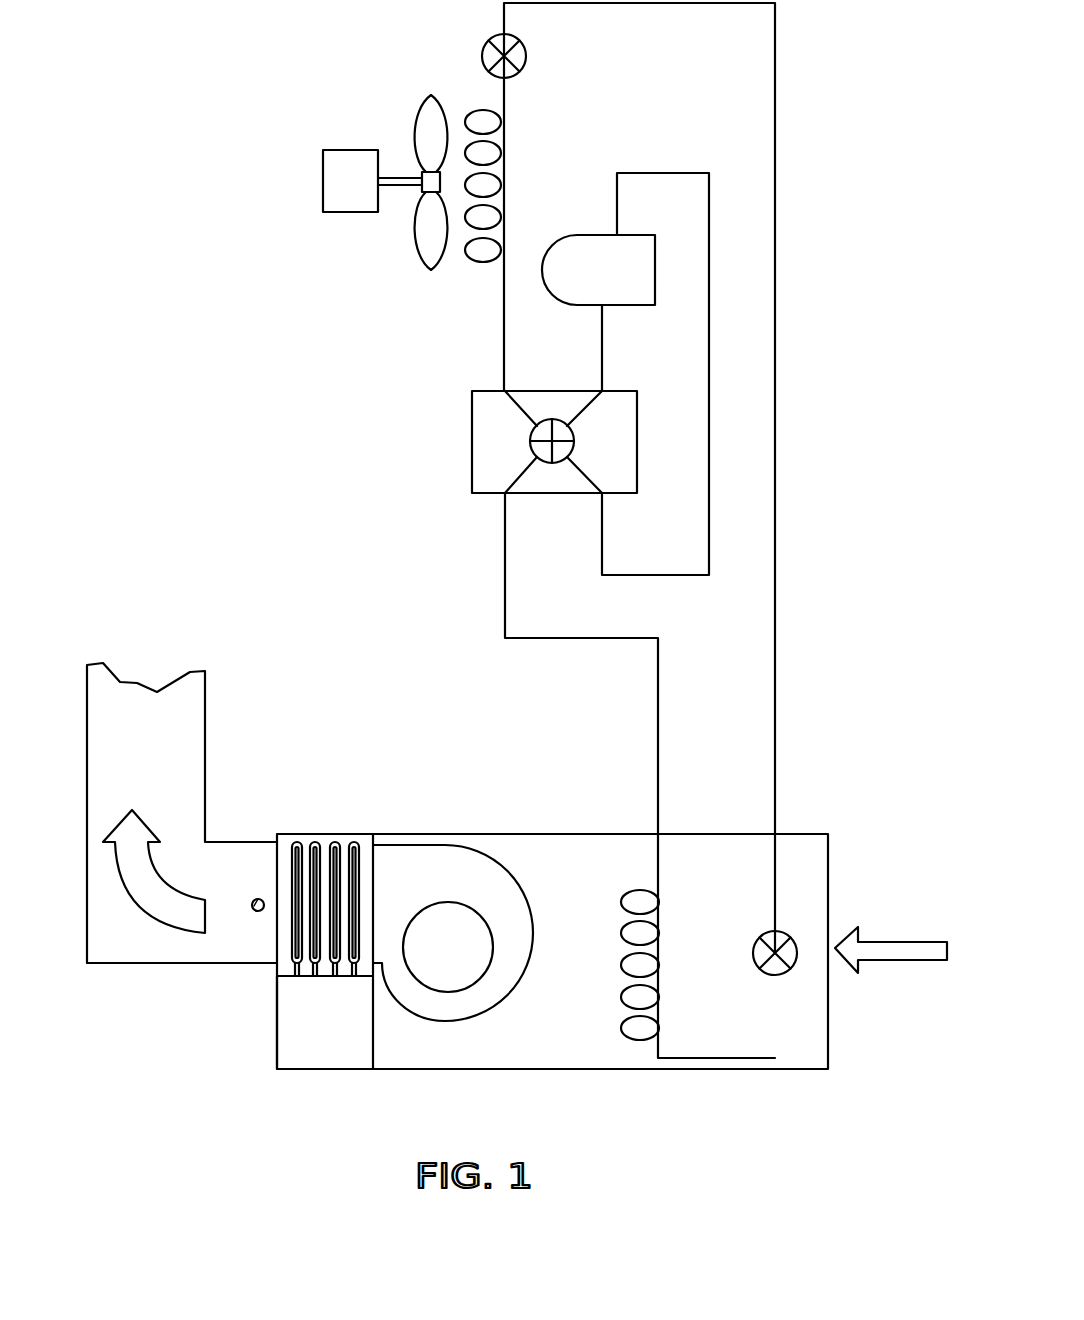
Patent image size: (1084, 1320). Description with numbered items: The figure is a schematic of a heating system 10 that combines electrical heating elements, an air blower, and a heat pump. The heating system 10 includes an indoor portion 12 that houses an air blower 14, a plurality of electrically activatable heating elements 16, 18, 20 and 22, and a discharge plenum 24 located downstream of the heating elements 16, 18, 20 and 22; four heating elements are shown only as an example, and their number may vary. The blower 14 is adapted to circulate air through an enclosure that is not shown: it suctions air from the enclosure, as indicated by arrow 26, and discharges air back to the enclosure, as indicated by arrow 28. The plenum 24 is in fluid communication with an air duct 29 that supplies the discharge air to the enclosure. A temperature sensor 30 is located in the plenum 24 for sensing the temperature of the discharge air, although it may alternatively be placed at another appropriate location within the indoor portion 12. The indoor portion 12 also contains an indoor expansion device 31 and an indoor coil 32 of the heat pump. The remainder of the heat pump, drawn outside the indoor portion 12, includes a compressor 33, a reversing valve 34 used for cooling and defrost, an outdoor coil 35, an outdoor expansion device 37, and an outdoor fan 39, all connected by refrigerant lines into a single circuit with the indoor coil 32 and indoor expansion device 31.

The heating system 10 is at (313, 453).
The indoor portion 12 is at (461, 828).
The air blower 14 is at (513, 875).
The heating element 16 is at (354, 840).
The heating element 18 is at (335, 840).
The heating element 20 is at (315, 840).
The heating element 22 is at (297, 840).
The discharge plenum 24 is at (248, 950).
The arrow 26 is at (908, 940).
The arrow 28 is at (168, 912).
The air duct 29 is at (205, 722).
The temperature sensor 30 is at (258, 899).
The indoor expansion device 31 is at (753, 950).
The indoor coil 32 is at (620, 970).
The compressor 33 is at (573, 238).
The reversing valve 34 is at (472, 415).
The outdoor coil 35 is at (477, 262).
The outdoor expansion device 37 is at (526, 50).
The outdoor fan 39 is at (338, 157).